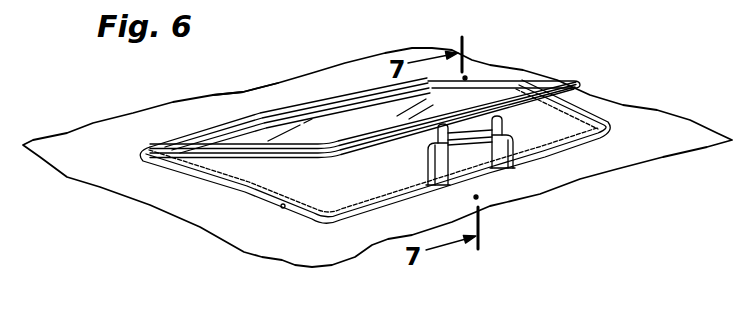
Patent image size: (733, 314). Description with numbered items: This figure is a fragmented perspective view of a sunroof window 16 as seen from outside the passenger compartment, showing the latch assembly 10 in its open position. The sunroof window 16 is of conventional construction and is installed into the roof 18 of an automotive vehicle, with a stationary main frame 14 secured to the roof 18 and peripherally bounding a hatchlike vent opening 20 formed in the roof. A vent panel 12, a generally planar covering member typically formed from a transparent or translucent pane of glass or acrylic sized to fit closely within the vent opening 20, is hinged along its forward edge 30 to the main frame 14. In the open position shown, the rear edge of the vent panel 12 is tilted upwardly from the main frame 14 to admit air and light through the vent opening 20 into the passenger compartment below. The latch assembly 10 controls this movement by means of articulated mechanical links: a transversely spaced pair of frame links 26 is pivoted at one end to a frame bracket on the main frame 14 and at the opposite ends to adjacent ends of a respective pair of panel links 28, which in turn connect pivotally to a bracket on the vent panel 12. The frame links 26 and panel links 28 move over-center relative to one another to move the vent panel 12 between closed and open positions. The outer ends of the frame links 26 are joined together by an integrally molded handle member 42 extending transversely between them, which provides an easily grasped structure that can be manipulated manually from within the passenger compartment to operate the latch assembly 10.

The latch assembly 10 is at (369, 162).
The vent panel 12 is at (330, 121).
The main frame 14 is at (369, 178).
The sunroof window 16 is at (91, 122).
The roof 18 is at (245, 96).
The vent opening 20 is at (282, 208).
The frame links 26 is at (583, 123).
The panel links 28 is at (510, 122).
The forward edge 30 is at (203, 128).
The handle member 42 is at (461, 142).